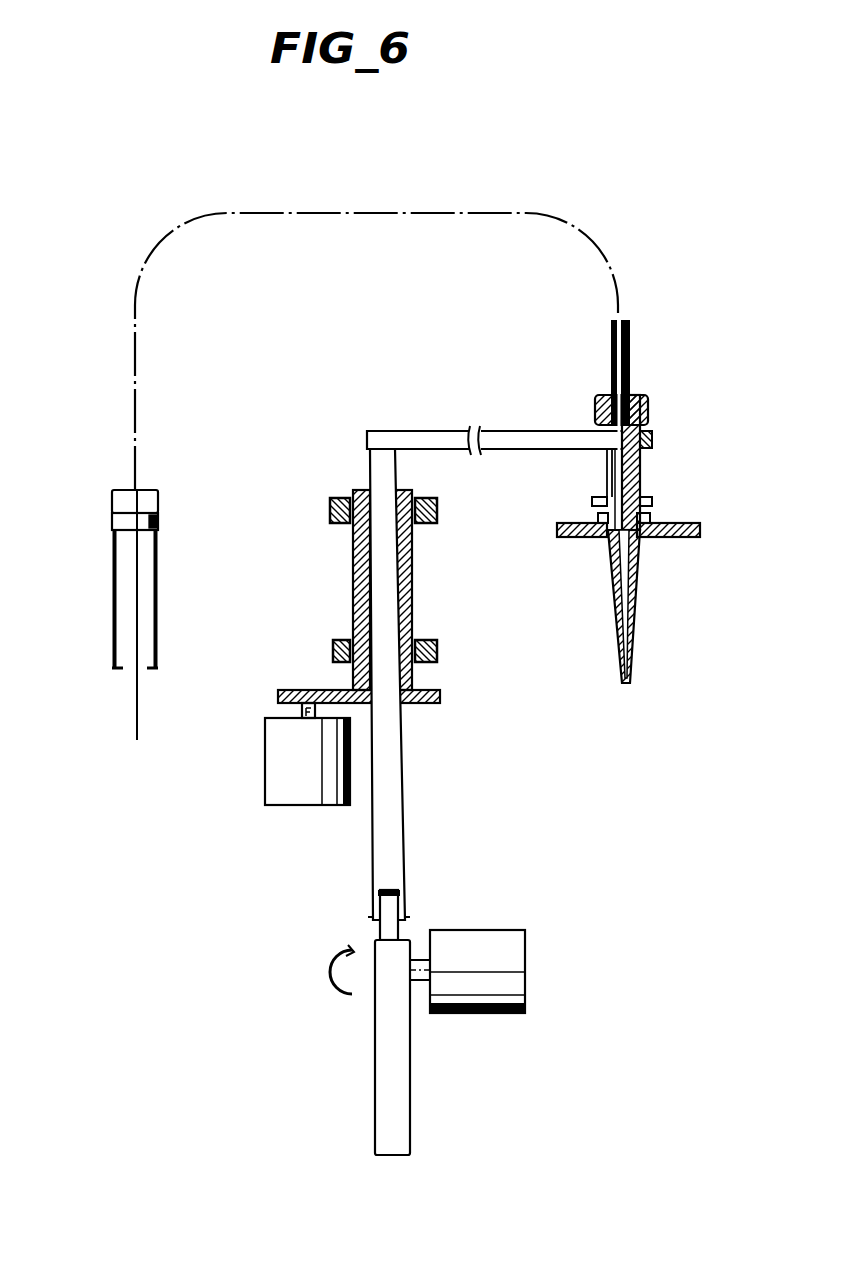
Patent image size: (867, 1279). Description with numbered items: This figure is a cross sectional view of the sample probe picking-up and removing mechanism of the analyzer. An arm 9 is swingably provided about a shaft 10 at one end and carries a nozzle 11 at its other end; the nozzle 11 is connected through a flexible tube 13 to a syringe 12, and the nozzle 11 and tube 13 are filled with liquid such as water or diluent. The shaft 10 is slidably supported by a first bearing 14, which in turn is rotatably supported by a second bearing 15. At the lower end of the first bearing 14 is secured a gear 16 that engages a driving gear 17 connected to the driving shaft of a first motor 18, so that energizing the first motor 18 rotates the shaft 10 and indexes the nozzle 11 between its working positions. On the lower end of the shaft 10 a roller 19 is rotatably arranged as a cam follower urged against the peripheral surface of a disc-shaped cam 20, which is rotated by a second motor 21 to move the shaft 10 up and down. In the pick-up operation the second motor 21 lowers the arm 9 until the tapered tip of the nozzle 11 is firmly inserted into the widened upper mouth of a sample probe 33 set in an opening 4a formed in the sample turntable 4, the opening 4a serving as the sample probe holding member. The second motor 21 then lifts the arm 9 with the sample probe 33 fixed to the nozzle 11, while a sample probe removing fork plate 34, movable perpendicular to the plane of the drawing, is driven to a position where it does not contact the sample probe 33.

The sample turntable 4 is at (690, 528).
The opening 4a is at (640, 538).
The arm 9 is at (507, 430).
The shaft 10 is at (373, 853).
The nozzle 11 is at (642, 465).
The syringe 12 is at (112, 568).
The flexible tube 13 is at (631, 352).
The first bearing 14 is at (353, 570).
The second bearing 15 is at (332, 505).
The gear 16 is at (440, 697).
The driving gear 17 is at (296, 688).
The first motor 18 is at (265, 755).
The roller 19 is at (385, 907).
The disc-shaped cam 20 is at (375, 1095).
The second motor 21 is at (525, 980).
The sample probe 33 is at (632, 596).
The sample probe removing fork plate 34 is at (606, 498).